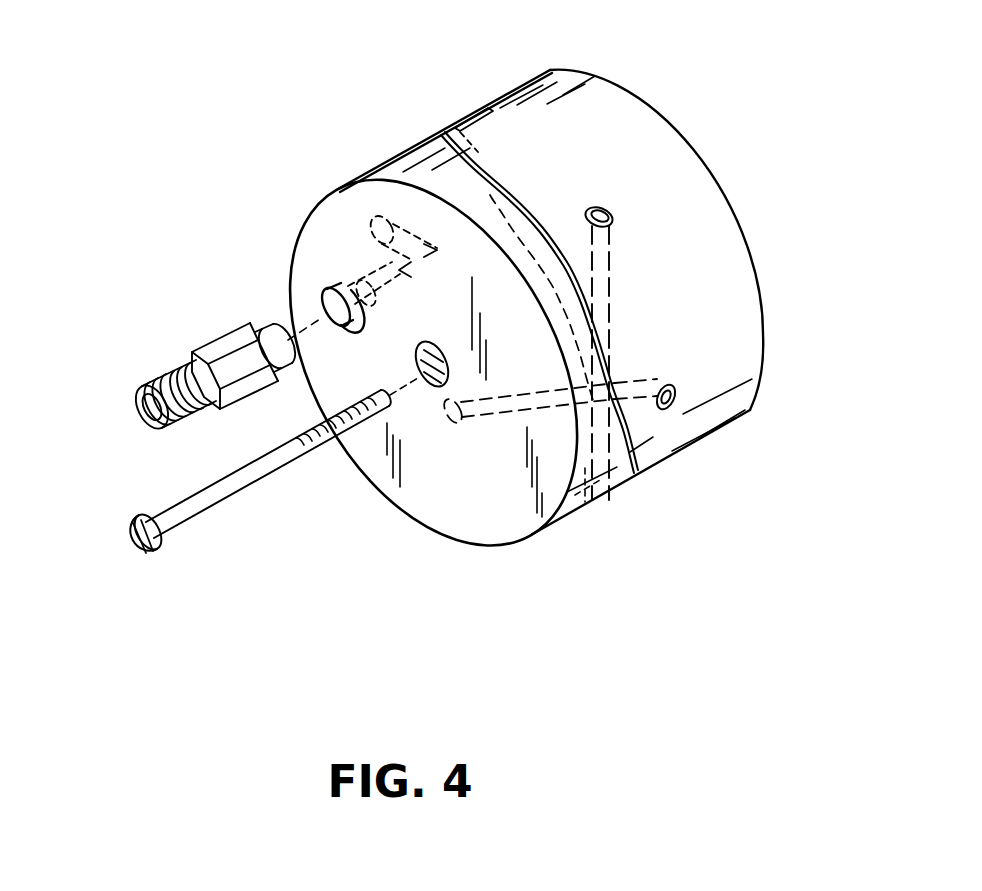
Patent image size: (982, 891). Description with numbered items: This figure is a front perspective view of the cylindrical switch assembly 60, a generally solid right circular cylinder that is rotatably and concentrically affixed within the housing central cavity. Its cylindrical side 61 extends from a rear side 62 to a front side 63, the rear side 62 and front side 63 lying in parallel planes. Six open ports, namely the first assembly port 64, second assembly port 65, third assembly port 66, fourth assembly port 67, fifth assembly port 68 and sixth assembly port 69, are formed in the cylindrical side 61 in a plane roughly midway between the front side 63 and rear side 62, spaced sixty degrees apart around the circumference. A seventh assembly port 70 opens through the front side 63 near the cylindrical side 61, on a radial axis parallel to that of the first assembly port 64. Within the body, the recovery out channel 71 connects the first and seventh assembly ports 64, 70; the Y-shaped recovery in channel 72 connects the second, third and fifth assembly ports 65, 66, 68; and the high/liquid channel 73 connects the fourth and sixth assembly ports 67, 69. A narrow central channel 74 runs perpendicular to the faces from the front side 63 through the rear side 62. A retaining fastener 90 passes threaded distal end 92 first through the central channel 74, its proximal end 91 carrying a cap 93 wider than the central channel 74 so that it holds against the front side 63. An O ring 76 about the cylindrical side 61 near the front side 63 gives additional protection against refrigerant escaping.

The cylindrical switch assembly 60 is at (597, 98).
The cylindrical side 61 is at (680, 170).
The rear side 62 is at (760, 284).
The front side 63 is at (488, 527).
The first assembly port 64 is at (377, 227).
The second assembly port 65 is at (483, 110).
The third assembly port 66 is at (594, 205).
The fourth assembly port 67 is at (678, 388).
The fifth assembly port 68 is at (585, 500).
The sixth assembly port 69 is at (456, 426).
The seventh assembly port 70 is at (264, 335).
The recovery out channel 71 is at (400, 277).
The recovery in channel 72 is at (603, 289).
The high/liquid channel 73 is at (643, 380).
The central channel 74 is at (418, 354).
The O ring 76 is at (445, 148).
The retaining fastener 90 is at (204, 512).
The proximal end 91 is at (160, 537).
The threaded distal end 92 is at (393, 410).
The cap 93 is at (120, 533).